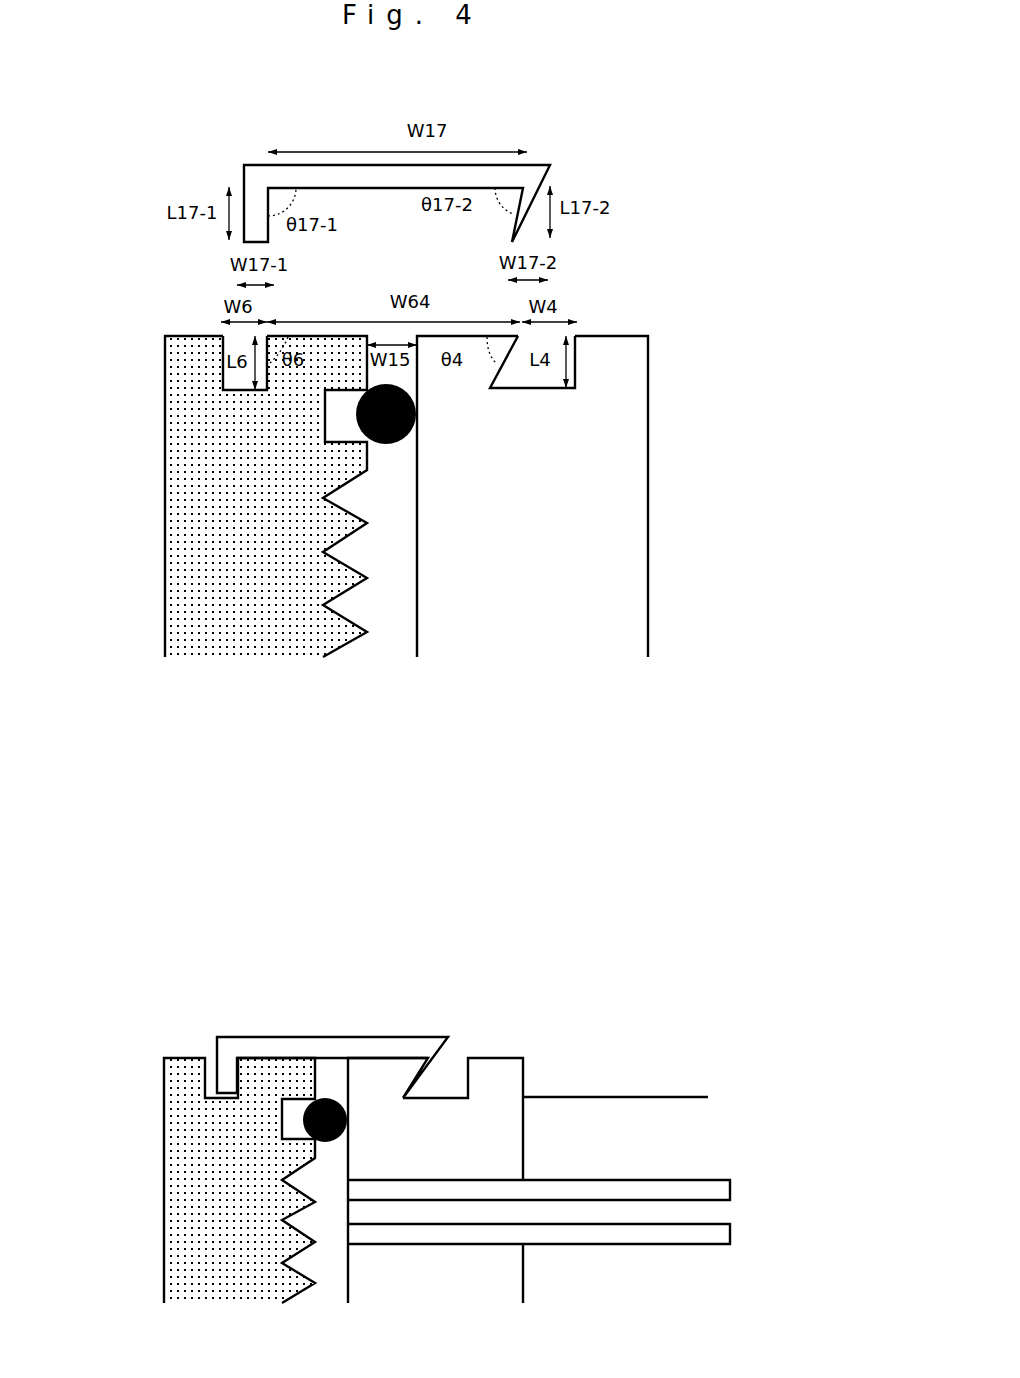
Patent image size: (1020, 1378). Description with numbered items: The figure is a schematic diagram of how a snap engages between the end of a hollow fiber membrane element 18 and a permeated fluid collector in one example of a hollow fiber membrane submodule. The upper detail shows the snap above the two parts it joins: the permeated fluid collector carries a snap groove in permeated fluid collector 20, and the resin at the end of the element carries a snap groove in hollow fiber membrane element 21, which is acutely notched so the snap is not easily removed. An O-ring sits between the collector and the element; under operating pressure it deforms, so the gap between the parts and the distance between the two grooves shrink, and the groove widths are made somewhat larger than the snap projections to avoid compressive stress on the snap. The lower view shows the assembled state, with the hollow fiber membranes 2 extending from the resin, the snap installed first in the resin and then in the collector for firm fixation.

The hollow fiber membranes 2 is at (613, 1185).
The hollow fiber membrane element 18 is at (602, 1117).
The snap groove in permeated fluid collector 20 is at (212, 323).
The snap groove in hollow fiber membrane element 21 is at (580, 320).